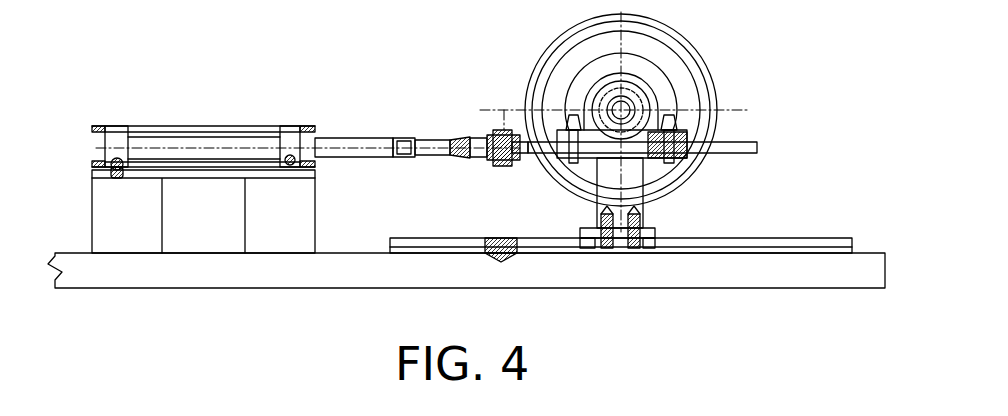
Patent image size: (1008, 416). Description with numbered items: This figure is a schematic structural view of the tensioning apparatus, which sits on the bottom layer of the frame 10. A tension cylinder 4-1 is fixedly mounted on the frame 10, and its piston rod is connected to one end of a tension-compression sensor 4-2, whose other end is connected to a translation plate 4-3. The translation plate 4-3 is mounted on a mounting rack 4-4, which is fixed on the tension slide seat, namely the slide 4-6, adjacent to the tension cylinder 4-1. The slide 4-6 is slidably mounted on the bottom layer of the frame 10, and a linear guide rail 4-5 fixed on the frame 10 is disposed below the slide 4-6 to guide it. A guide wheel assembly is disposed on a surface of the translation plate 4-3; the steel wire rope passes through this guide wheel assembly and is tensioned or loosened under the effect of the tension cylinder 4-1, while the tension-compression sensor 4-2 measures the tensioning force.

The frame 10 is at (86, 253).
The tension cylinder 4-1 is at (225, 140).
The tension-compression sensor 4-2 is at (447, 138).
The translation plate 4-3 is at (750, 140).
The mounting rack 4-4 is at (640, 188).
The linear guide rail 4-5 is at (448, 237).
The slide 4-6 is at (582, 232).